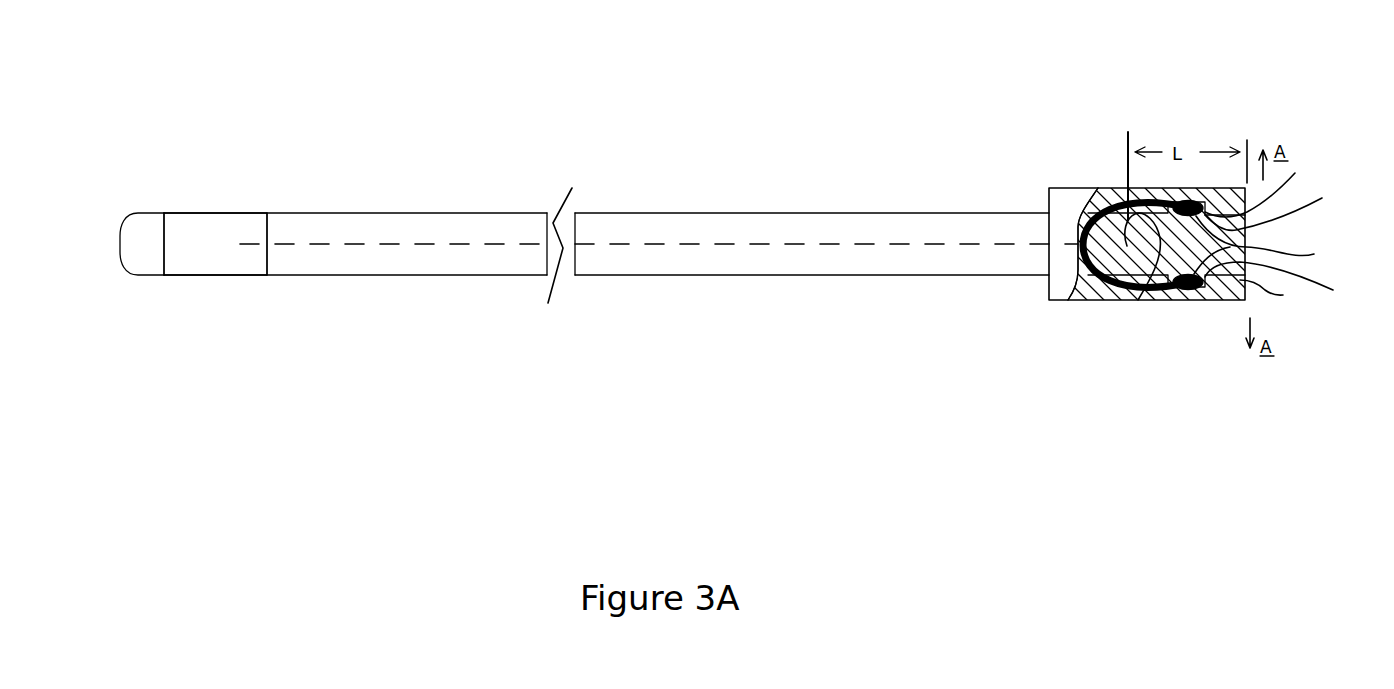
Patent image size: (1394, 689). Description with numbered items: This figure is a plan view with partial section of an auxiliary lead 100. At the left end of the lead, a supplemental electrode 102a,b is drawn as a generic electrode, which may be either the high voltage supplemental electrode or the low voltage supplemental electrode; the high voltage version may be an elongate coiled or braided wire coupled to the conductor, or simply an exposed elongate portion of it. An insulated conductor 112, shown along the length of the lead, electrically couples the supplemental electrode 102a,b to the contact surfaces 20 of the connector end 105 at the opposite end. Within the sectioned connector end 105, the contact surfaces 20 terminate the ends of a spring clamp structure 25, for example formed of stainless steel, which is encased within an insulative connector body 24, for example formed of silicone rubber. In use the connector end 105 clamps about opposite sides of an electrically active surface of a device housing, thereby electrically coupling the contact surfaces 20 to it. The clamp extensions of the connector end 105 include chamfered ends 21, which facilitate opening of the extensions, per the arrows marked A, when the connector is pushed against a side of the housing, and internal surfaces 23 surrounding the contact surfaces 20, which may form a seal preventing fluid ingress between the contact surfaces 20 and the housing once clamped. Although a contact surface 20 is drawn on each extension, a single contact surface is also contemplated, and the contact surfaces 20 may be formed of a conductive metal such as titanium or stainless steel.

The auxiliary lead 100 is at (712, 73).
The supplemental electrode 102a,b is at (206, 222).
The insulated conductor 112 is at (358, 246).
The connector end 105 is at (1212, 350).
The spring clamp structure 25 is at (1078, 300).
The insulative connector body 24 is at (1112, 212).
The chamfered ends 21 is at (1249, 236).
The internal surfaces 23 is at (1113, 398).
The contact surfaces 20 is at (1267, 245).